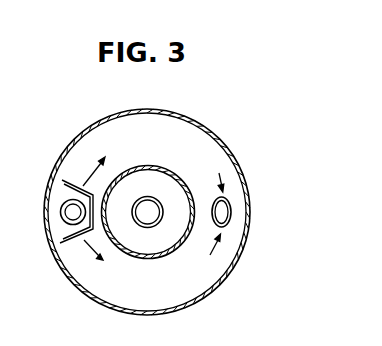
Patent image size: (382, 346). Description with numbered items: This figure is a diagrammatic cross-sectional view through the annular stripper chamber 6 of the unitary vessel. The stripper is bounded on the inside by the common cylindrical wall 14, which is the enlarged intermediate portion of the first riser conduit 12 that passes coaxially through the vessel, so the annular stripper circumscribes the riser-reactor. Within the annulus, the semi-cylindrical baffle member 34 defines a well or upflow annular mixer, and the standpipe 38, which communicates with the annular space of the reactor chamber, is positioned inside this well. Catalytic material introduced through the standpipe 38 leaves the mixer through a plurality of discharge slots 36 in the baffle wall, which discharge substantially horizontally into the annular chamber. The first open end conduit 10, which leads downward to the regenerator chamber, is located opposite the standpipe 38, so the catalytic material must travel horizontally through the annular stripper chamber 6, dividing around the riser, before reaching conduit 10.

The annular stripper chamber 6 is at (233, 164).
The first open end conduit 10 is at (216, 199).
The first riser conduit 12 is at (150, 227).
The common cylindrical wall 14 is at (171, 168).
The semi-cylindrical baffle member 34 is at (63, 239).
The discharge slots 36 is at (83, 185).
The standpipe 38 is at (61, 212).